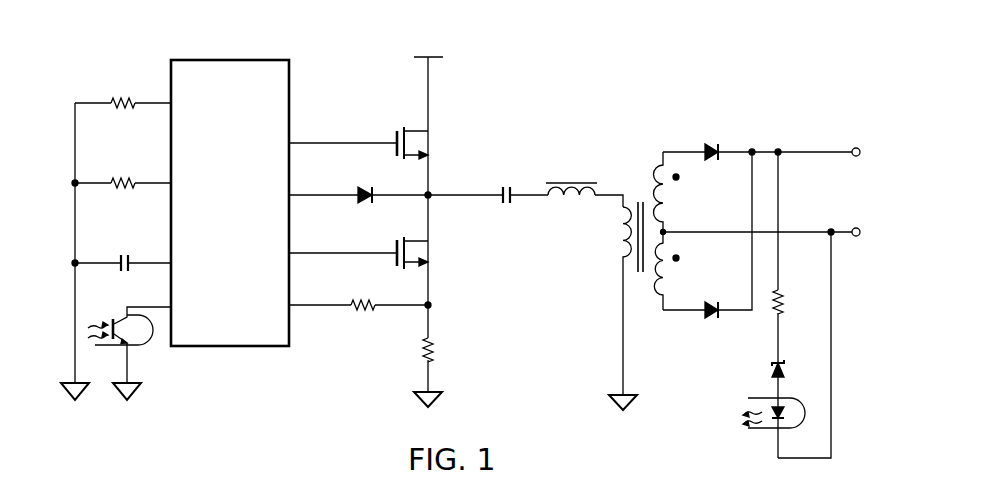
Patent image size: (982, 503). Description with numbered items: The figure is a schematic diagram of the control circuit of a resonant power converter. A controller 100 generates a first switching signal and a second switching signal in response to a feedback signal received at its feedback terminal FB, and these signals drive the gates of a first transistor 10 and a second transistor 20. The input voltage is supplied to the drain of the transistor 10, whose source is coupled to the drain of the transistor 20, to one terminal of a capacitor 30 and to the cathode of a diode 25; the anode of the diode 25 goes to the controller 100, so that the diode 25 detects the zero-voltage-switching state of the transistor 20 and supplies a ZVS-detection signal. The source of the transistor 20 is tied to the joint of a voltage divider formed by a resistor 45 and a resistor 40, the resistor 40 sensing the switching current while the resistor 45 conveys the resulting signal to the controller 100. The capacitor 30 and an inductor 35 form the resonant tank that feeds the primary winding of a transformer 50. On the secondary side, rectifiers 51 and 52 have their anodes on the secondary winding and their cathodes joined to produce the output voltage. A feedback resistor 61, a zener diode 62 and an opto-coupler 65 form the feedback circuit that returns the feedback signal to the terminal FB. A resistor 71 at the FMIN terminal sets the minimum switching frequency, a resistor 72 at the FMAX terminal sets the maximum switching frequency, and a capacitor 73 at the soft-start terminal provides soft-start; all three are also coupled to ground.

The controller 100 is at (499, 190).
The resistor 71 is at (123, 91).
The resistor 72 is at (123, 171).
The capacitor 73 is at (124, 252).
The opto-coupler 65 is at (446, 372).
The first transistor 10 is at (358, 133).
The second transistor 20 is at (358, 241).
The diode 25 is at (396, 183).
The capacitor 30 is at (520, 181).
The inductor 35 is at (584, 182).
The resistor 40 is at (415, 350).
The resistor 45 is at (360, 292).
The transformer 50 is at (651, 273).
The rectifier 51 is at (712, 139).
The rectifier 52 is at (712, 328).
The feedback resistor 61 is at (793, 301).
The zener diode 62 is at (793, 366).